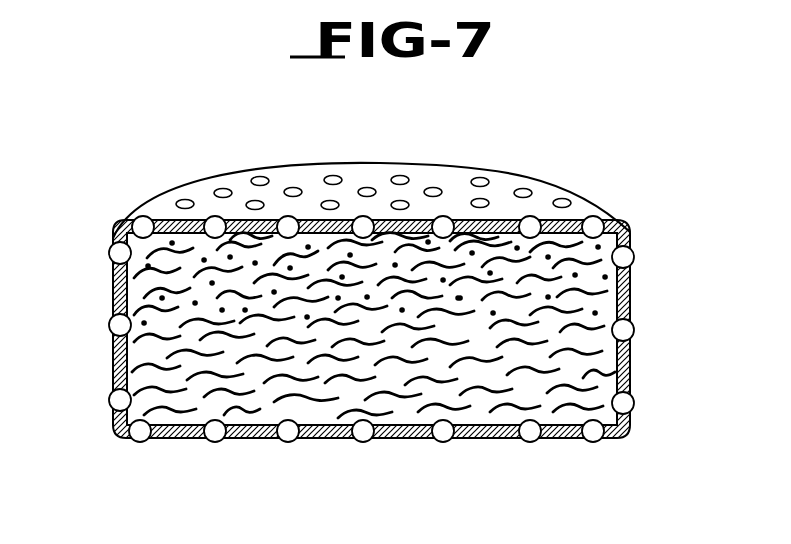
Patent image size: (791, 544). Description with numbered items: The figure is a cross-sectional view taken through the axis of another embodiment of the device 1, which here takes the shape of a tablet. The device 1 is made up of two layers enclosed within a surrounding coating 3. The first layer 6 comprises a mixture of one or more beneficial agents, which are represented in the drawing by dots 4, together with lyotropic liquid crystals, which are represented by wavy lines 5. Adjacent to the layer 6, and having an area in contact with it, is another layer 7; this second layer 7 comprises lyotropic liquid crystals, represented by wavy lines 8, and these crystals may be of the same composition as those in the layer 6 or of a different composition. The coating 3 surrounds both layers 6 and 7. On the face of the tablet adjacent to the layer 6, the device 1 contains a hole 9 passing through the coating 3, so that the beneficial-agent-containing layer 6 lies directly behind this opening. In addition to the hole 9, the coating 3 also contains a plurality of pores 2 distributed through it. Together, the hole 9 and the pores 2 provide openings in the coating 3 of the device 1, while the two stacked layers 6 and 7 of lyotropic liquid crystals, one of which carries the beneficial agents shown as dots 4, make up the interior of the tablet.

The device 1 is at (548, 178).
The pores 2 is at (470, 202).
The coating 3 is at (477, 440).
The dots 4 is at (180, 244).
The wavy lines 5 is at (117, 307).
The layer 6 is at (578, 300).
The layer 7 is at (600, 366).
The wavy lines 8 is at (303, 428).
The hole 9 is at (356, 217).